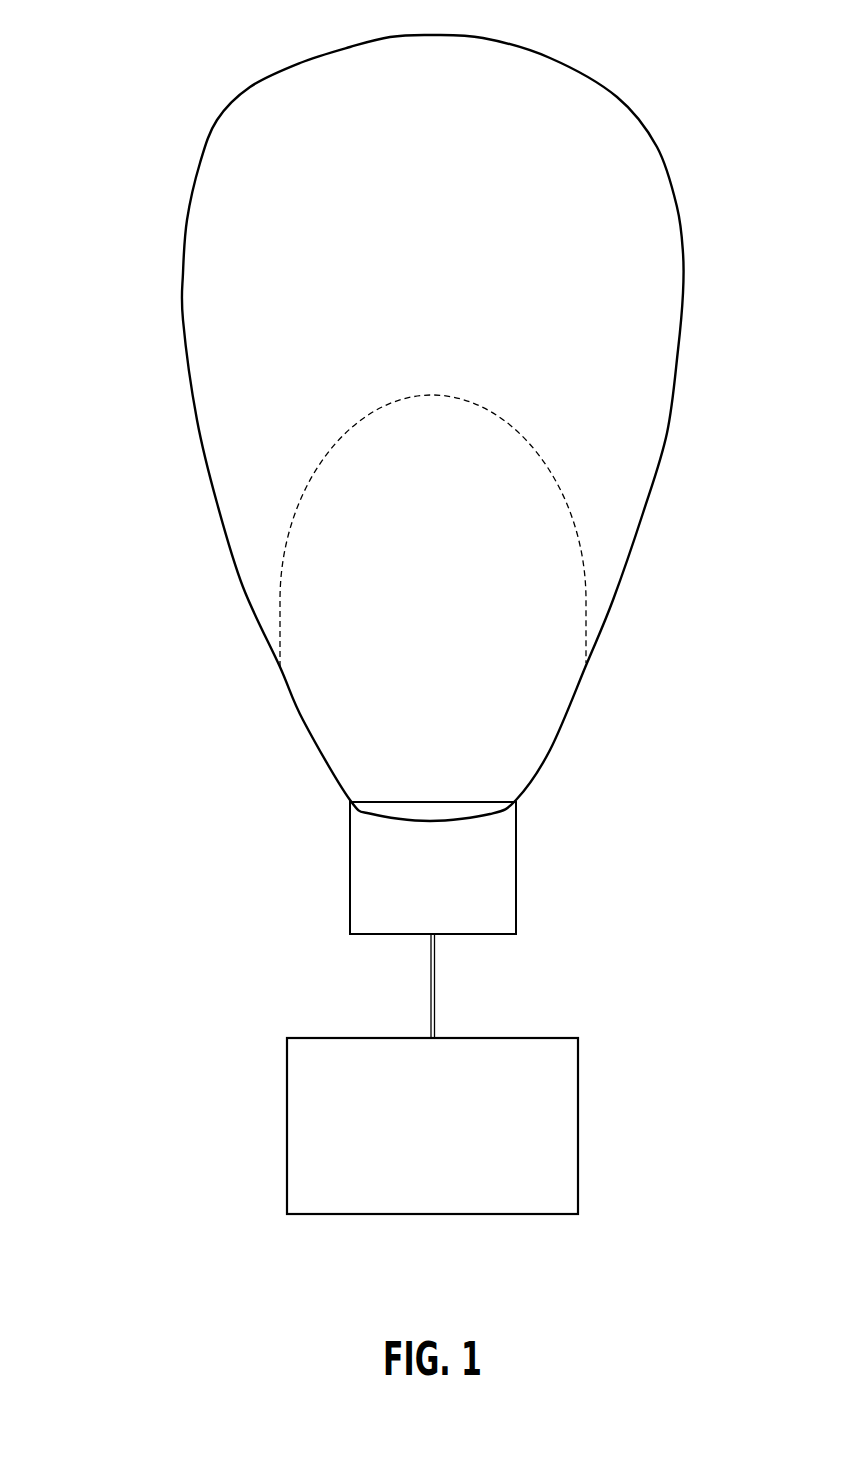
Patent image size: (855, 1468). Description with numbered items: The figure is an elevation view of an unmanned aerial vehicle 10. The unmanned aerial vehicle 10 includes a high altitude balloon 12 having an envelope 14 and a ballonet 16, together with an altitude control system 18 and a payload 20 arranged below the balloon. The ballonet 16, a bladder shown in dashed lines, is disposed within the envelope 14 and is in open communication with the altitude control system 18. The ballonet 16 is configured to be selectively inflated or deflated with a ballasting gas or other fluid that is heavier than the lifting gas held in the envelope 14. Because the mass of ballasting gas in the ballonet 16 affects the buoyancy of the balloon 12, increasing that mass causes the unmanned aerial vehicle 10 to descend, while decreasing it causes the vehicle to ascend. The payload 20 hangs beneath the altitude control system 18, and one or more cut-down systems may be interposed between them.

The unmanned aerial vehicle 10 is at (670, 70).
The high altitude balloon 12 is at (145, 421).
The envelope 14 is at (183, 272).
The ballonet 16 is at (580, 513).
The altitude control system 18 is at (530, 873).
The payload 20 is at (589, 1071).